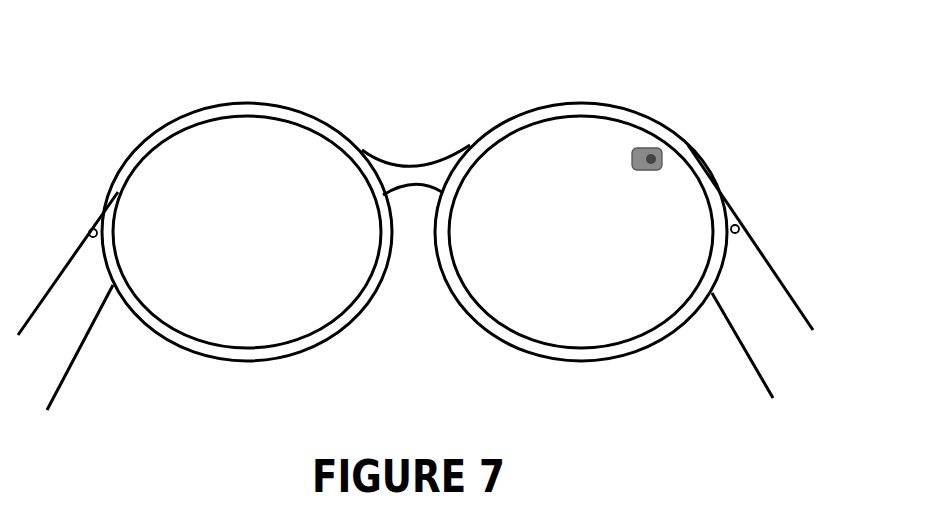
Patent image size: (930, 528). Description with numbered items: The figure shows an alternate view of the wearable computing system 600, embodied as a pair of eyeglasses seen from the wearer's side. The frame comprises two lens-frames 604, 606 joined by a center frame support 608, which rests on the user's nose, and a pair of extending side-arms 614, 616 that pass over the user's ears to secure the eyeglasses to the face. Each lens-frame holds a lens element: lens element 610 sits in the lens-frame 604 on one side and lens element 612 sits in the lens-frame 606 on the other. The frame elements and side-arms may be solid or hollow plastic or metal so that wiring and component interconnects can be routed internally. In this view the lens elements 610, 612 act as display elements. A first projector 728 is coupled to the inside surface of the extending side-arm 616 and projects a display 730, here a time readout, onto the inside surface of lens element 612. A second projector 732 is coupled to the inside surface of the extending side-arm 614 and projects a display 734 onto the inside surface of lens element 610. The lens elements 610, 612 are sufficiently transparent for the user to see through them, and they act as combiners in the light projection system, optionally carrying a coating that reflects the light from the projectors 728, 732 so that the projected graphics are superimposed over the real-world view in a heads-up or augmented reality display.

The system 600 is at (415, 280).
The lens-frame 604 is at (667, 338).
The lens-frame 606 is at (140, 320).
The center frame support 608 is at (400, 170).
The lens element 610 is at (585, 330).
The lens element 612 is at (257, 333).
The extending side-arm 614 is at (763, 248).
The extending side-arm 616 is at (70, 255).
The first projector 728 is at (95, 227).
The display 730 is at (225, 153).
The second projector 732 is at (732, 212).
The display 734 is at (658, 172).